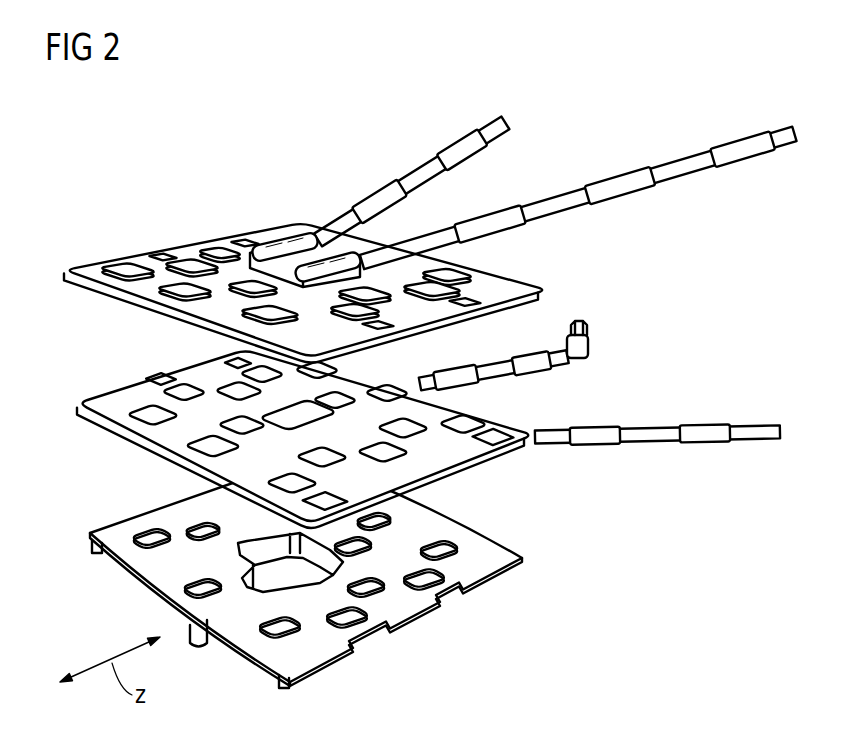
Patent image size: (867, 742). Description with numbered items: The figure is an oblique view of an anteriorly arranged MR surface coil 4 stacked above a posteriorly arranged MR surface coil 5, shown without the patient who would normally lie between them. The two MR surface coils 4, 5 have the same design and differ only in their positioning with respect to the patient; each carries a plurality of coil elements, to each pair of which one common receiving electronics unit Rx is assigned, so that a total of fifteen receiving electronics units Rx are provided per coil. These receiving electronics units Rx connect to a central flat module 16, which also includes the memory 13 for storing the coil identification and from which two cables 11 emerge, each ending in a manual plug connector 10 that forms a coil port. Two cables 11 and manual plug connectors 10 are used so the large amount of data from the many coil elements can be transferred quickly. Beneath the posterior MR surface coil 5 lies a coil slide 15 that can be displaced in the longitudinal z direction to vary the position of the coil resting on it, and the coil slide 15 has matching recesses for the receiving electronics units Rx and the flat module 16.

The anteriorly arranged MR surface coil 4 is at (187, 255).
The posteriorly arranged MR surface coil 5 is at (108, 405).
The manual plug connector 10 is at (589, 343).
The cable 11 is at (417, 183).
The memory 13 is at (306, 257).
The coil slide 15 is at (478, 565).
The flat module 16 is at (300, 263).
The receiving electronics unit Rx is at (131, 268).